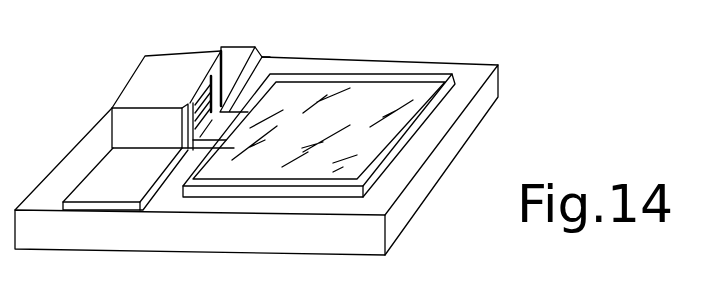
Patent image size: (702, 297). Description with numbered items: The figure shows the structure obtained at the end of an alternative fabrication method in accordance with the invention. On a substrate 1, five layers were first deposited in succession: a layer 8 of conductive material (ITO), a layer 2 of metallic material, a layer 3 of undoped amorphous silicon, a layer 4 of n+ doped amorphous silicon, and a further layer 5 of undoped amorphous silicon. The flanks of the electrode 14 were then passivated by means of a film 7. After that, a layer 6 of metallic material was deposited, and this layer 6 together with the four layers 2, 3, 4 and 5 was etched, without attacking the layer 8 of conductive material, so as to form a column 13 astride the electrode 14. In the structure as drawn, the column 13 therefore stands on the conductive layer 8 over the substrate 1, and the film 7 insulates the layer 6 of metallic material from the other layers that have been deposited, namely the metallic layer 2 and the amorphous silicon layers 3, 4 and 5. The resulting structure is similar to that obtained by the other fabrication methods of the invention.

The substrate 1 is at (403, 228).
The layer of metallic material 2 is at (241, 79).
The layer of undoped amorphous silicon 3 is at (204, 110).
The layer of n+ doped amorphous silicon 4 is at (186, 106).
The layer of undoped amorphous silicon 5 is at (205, 91).
The layer of metallic material 6 is at (196, 95).
The film 7 is at (193, 125).
The layer of conductive material 8 is at (336, 170).
The column 13 is at (150, 41).
The electrode 14 is at (305, 152).